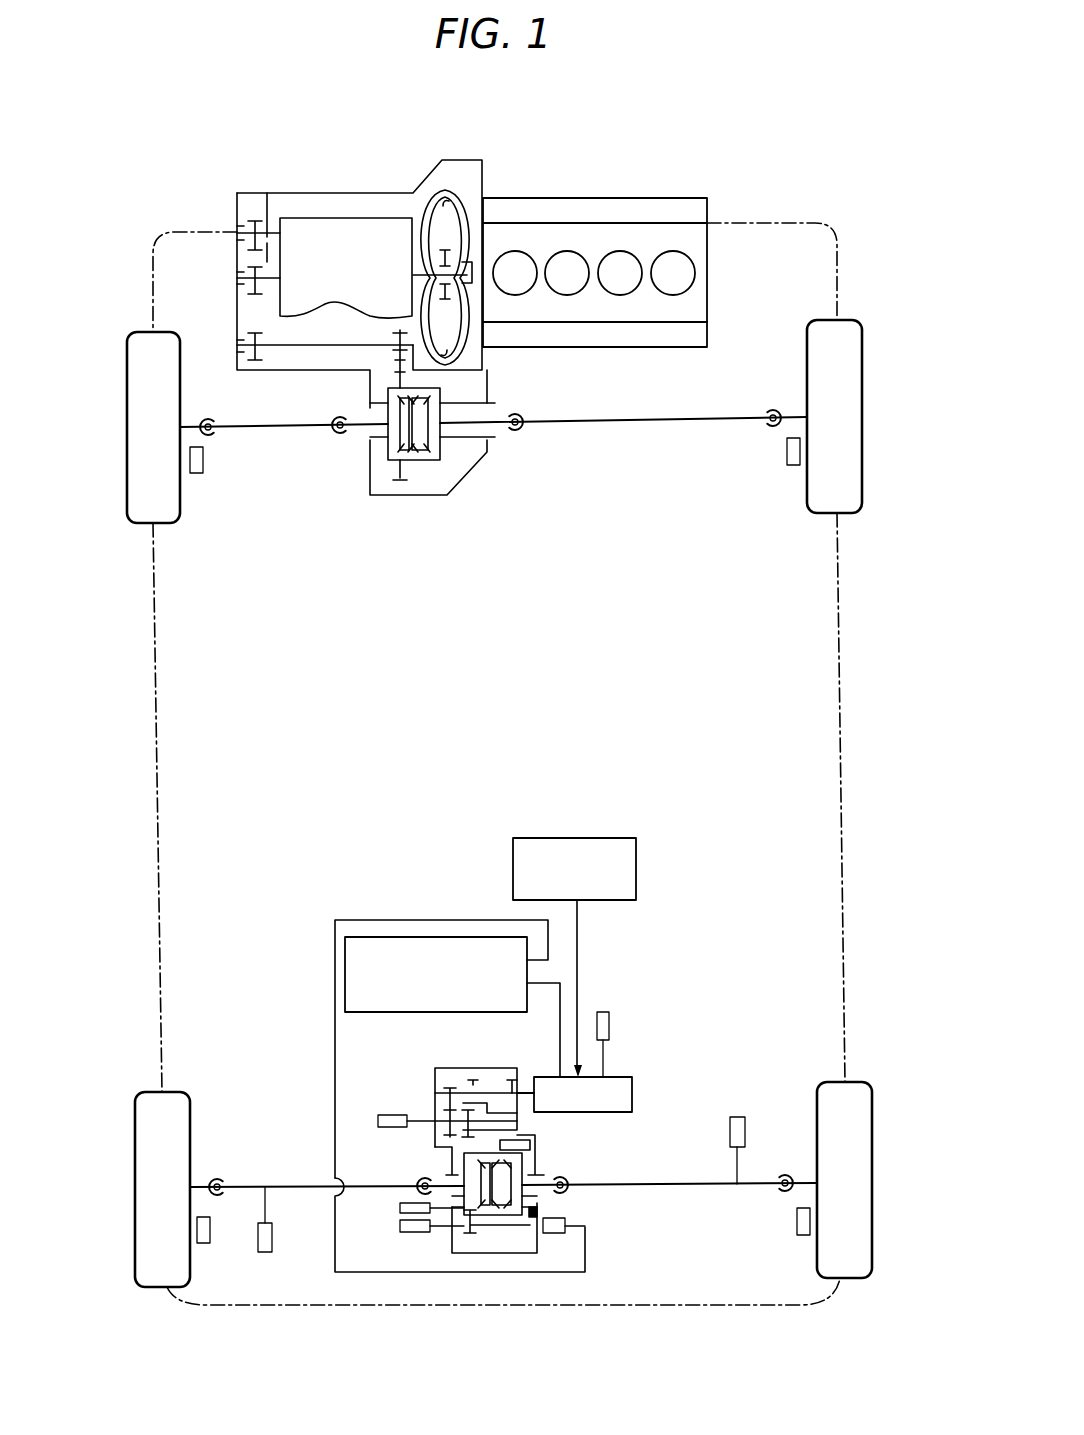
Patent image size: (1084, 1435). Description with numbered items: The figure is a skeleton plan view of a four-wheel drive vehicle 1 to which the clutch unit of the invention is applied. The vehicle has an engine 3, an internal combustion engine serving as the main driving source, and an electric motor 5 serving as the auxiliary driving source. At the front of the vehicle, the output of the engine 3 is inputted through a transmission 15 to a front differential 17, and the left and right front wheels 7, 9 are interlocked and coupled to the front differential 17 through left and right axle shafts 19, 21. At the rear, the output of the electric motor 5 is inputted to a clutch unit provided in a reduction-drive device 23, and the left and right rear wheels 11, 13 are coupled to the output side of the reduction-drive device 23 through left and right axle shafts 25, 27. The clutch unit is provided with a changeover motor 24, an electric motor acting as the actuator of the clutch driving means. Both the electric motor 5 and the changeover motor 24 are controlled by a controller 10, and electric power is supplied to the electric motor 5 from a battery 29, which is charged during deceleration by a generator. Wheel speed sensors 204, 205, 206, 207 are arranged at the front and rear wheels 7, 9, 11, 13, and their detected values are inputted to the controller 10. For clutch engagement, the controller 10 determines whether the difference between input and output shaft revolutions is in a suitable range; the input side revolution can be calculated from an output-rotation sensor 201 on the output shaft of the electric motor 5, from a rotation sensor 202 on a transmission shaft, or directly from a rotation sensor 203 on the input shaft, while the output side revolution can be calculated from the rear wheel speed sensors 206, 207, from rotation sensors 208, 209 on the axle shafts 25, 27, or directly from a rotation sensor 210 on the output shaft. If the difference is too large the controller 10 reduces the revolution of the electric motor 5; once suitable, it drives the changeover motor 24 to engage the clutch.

The four-wheel drive vehicle 1 is at (688, 175).
The engine 3 is at (592, 198).
The electric motor 5 is at (632, 1092).
The left front wheel 7 is at (127, 428).
The right front wheel 9 is at (862, 415).
The controller 10 is at (436, 937).
The left rear wheel 11 is at (135, 1188).
The right rear wheel 13 is at (872, 1177).
The transmission 15 is at (293, 185).
The front differential 17 is at (386, 472).
The left axle shaft 19 is at (272, 428).
The right axle shaft 21 is at (592, 420).
The reduction-drive device 23 is at (430, 1066).
The changeover motor 24 is at (565, 1222).
The left axle shaft 25 is at (304, 1187).
The right axle shaft 27 is at (662, 1184).
The battery 29 is at (636, 872).
The output-rotation sensor 201 is at (609, 1027).
The rotation sensor 202 is at (393, 1115).
The rotation sensor 203 is at (400, 1228).
The wheel speed sensor 204 is at (197, 473).
The wheel speed sensor 205 is at (794, 465).
The wheel speed sensor 206 is at (204, 1243).
The wheel speed sensor 207 is at (797, 1222).
The rotation sensor 208 is at (737, 1117).
The rotation sensor 209 is at (266, 1252).
The rotation sensor 210 is at (400, 1208).